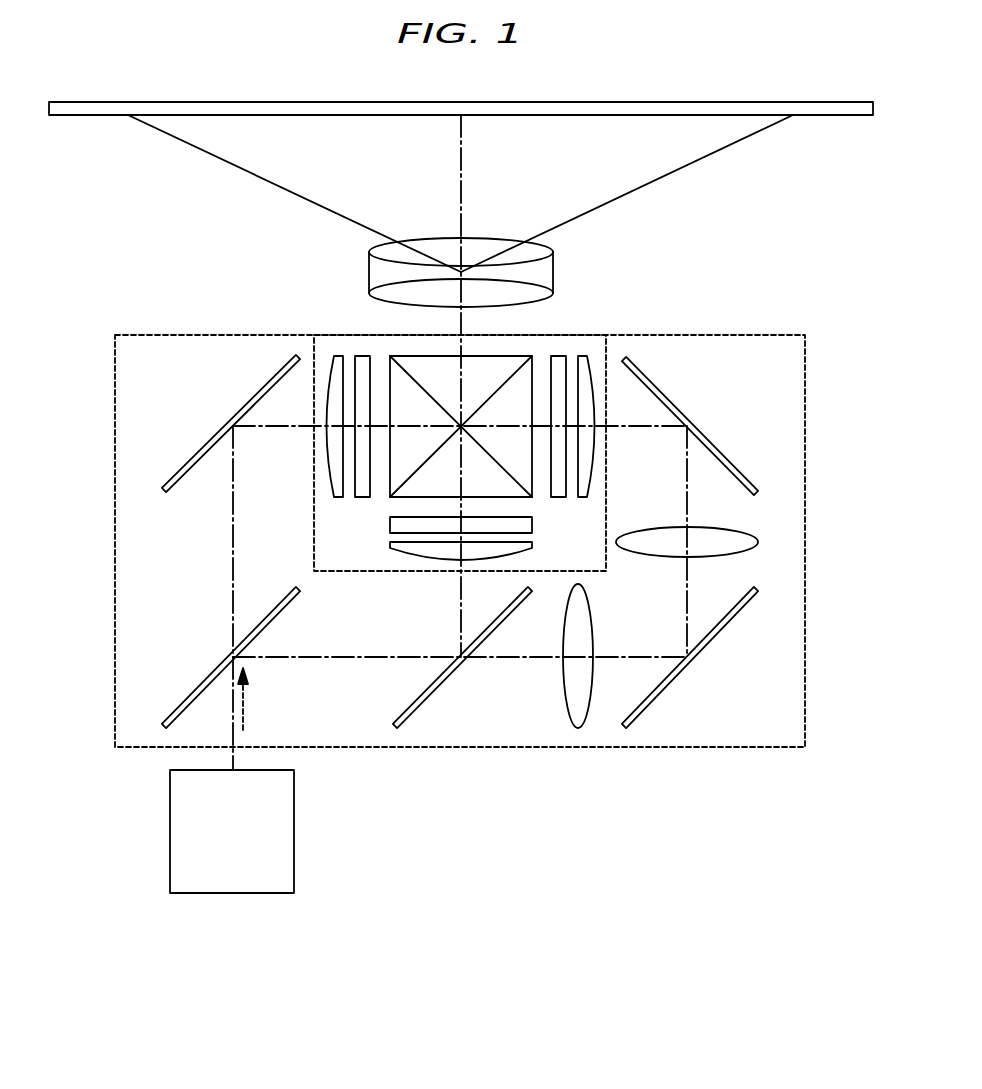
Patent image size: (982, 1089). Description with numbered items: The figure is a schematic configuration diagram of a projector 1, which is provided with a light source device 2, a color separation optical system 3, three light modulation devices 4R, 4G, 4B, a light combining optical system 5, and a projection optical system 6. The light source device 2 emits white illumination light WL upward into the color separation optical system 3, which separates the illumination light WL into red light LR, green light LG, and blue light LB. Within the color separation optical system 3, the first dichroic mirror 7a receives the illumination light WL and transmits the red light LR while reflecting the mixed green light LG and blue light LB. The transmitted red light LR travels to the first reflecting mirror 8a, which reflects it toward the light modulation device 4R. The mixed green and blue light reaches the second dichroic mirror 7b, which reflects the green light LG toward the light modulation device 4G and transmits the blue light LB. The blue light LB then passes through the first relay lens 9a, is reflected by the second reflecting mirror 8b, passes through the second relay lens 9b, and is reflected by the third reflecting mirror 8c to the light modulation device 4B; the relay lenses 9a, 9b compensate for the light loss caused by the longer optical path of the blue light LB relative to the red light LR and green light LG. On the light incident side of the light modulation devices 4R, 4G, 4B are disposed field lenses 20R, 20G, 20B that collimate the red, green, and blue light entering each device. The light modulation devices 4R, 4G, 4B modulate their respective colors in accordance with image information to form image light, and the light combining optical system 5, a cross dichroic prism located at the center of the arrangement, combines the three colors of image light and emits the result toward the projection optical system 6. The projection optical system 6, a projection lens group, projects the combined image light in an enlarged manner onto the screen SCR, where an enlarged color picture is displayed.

The projector 1 is at (814, 308).
The light source device 2 is at (294, 833).
The color separation optical system 3 is at (115, 484).
The light modulation device 4R is at (360, 355).
The light modulation device 4G is at (394, 523).
The light modulation device 4B is at (562, 355).
The field lens 20R is at (332, 357).
The field lens 20G is at (394, 548).
The field lens 20B is at (588, 357).
The light combining optical system 5 is at (484, 366).
The projection optical system 6 is at (440, 248).
The first dichroic mirror 7a is at (193, 688).
The second dichroic mirror 7b is at (437, 690).
The first reflecting mirror 8a is at (207, 441).
The second reflecting mirror 8b is at (713, 640).
The third reflecting mirror 8c is at (716, 442).
The first relay lens 9a is at (562, 678).
The second relay lens 9b is at (755, 535).
The screen SCR is at (838, 118).
The illumination light WL is at (243, 710).
The red light LR is at (233, 563).
The green light LG is at (461, 610).
The blue light LB is at (687, 600).